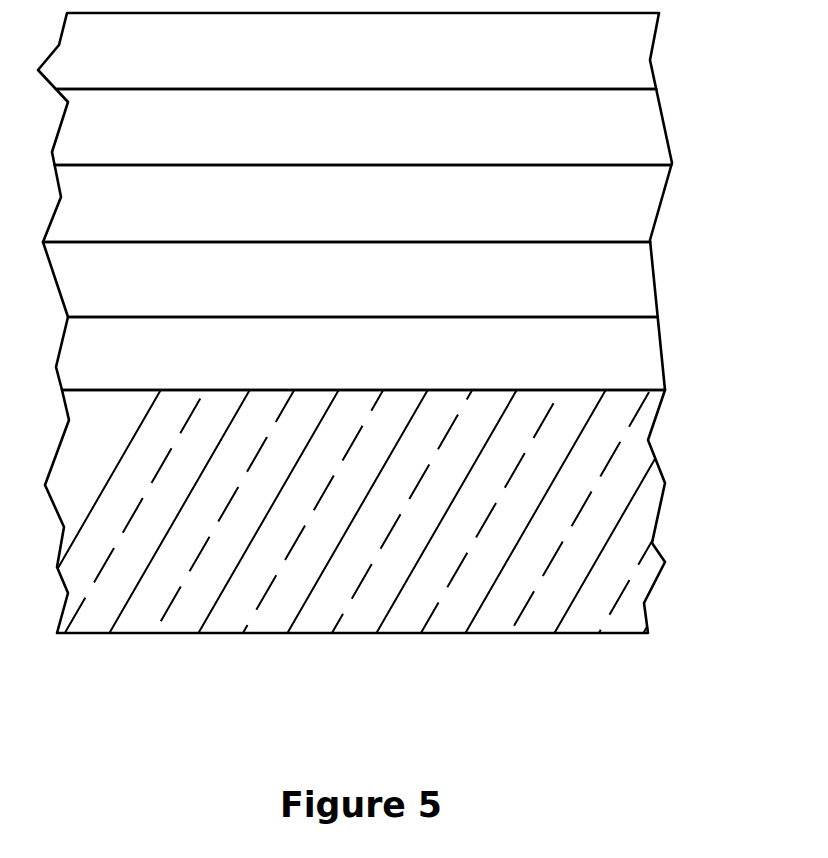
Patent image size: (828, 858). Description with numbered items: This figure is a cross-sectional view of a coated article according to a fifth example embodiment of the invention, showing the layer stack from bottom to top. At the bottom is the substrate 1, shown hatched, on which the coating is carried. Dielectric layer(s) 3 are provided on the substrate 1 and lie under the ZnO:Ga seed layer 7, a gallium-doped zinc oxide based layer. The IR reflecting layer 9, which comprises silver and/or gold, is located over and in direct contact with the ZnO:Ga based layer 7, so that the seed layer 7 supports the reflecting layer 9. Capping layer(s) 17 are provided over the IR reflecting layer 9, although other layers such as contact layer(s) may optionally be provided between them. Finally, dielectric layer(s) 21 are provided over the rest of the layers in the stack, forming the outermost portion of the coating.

The substrate 1 is at (632, 526).
The dielectric layer(s) 3 is at (627, 355).
The ZnO:Ga seed layer 7 is at (627, 281).
The IR reflecting layer 9 is at (627, 205).
The capping layer(s) 17 is at (625, 129).
The dielectric layer(s) 21 is at (625, 54).